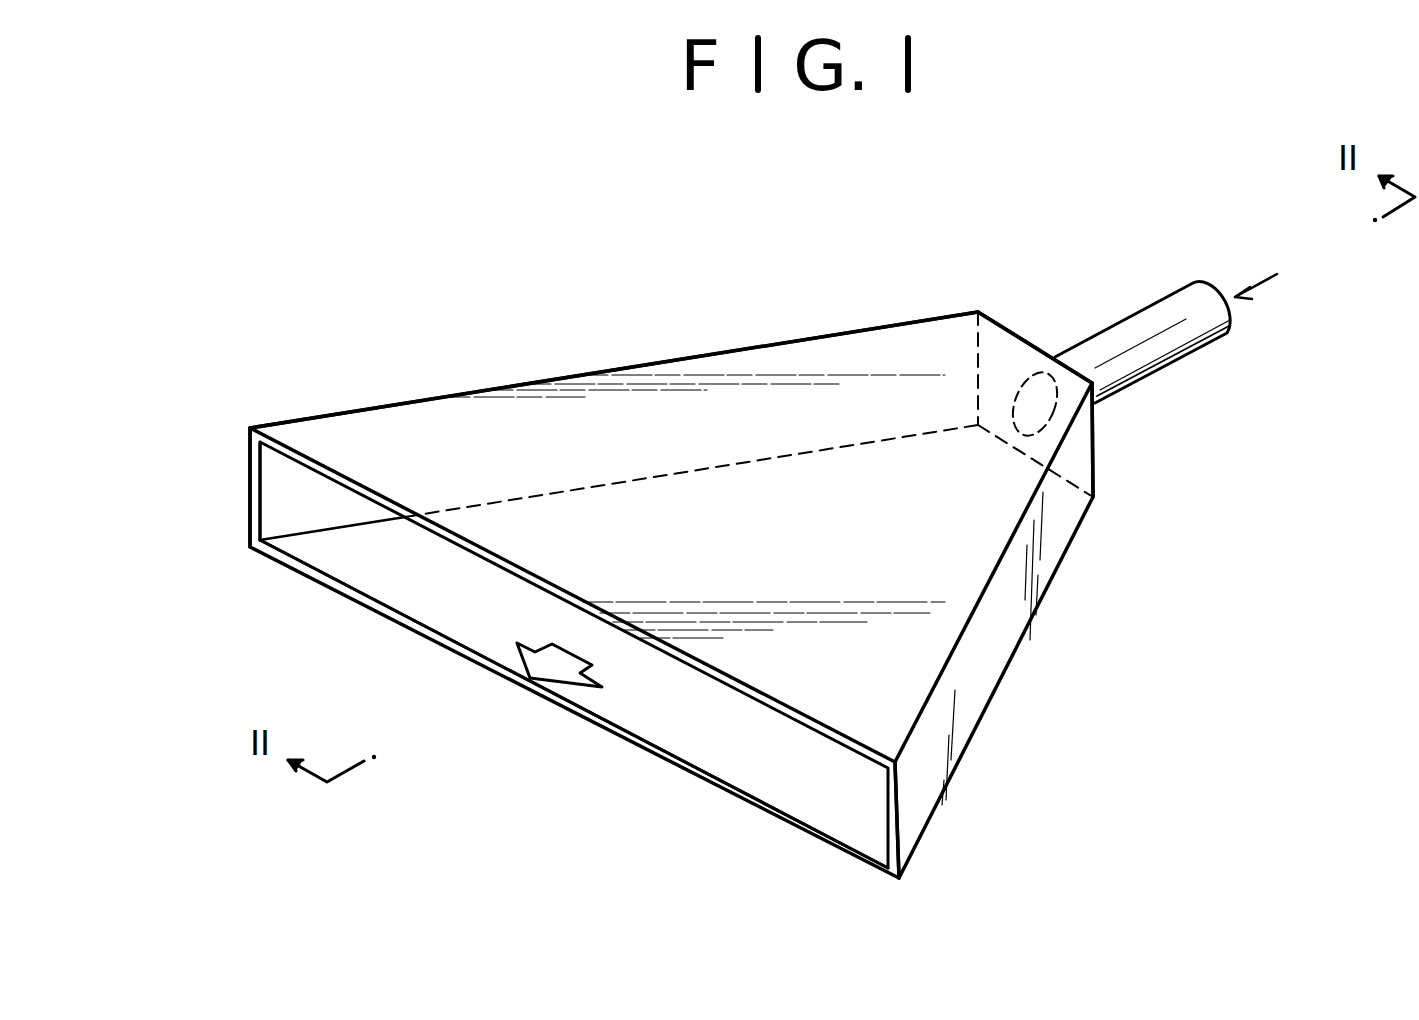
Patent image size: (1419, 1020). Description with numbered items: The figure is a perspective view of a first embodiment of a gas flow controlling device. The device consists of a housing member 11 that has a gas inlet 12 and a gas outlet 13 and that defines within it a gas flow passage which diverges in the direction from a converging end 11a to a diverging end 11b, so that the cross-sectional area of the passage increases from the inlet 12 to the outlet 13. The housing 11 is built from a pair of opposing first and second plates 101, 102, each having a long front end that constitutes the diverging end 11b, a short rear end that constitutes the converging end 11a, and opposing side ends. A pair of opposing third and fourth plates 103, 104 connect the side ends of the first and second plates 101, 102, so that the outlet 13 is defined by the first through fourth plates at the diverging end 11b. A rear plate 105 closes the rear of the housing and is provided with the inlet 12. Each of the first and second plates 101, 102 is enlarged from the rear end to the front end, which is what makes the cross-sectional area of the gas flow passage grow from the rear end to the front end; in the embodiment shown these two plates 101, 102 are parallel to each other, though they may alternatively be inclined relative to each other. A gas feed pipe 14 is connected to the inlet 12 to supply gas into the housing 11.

The housing member 11 is at (698, 378).
The converging end 11a is at (1095, 448).
The diverging end 11b is at (900, 808).
The gas inlet 12 is at (1040, 377).
The gas outlet 13 is at (812, 798).
The gas feed pipe 14 is at (1177, 345).
The first plate 101 is at (387, 427).
The second plate 102 is at (448, 607).
The third plate 103 is at (290, 483).
The fourth plate 104 is at (998, 639).
The rear plate 105 is at (1007, 350).